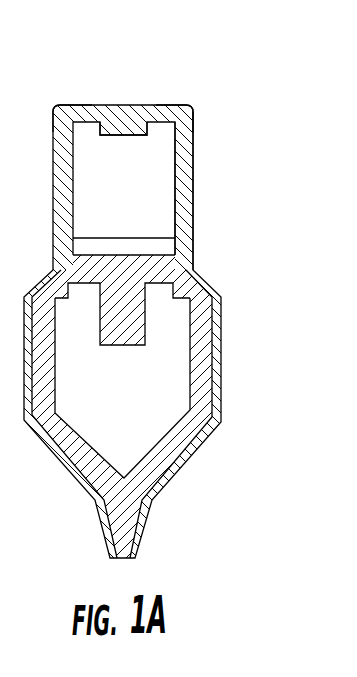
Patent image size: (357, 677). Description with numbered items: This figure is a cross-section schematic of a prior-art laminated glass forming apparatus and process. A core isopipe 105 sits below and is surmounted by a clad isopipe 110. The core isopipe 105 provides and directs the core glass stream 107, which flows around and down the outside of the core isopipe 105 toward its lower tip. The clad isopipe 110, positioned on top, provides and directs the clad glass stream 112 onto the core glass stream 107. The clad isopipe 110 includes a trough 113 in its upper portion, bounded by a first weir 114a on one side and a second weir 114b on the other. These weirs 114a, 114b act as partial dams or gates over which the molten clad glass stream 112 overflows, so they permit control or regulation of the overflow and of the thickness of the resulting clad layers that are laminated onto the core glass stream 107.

The core isopipe 105 is at (148, 410).
The core glass stream 107 is at (133, 253).
The clad isopipe 110 is at (145, 208).
The clad glass stream 112 is at (187, 136).
The trough 113 is at (147, 106).
The first weir 114a is at (83, 116).
The second weir 114b is at (163, 113).